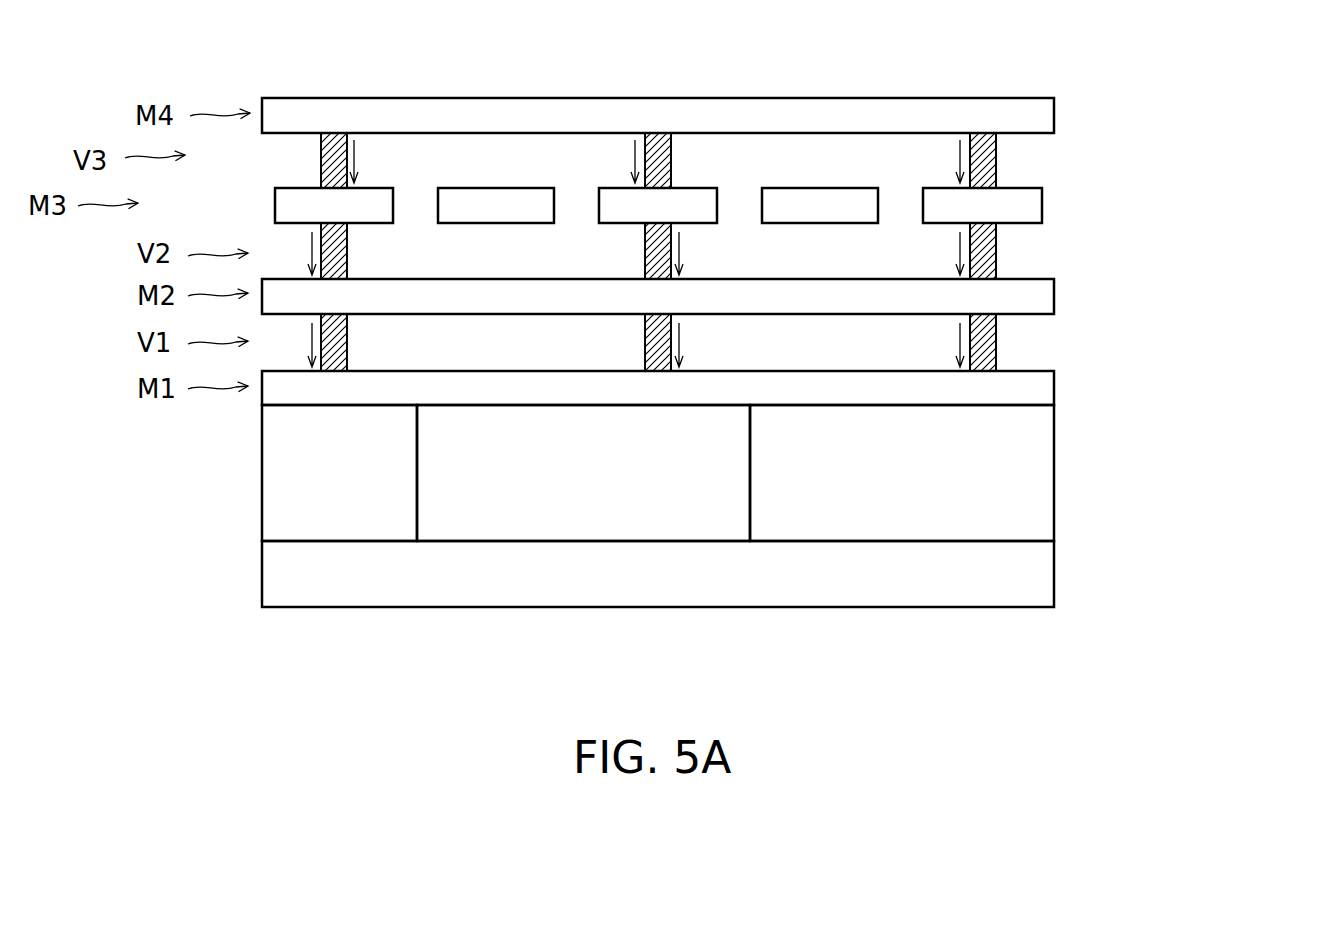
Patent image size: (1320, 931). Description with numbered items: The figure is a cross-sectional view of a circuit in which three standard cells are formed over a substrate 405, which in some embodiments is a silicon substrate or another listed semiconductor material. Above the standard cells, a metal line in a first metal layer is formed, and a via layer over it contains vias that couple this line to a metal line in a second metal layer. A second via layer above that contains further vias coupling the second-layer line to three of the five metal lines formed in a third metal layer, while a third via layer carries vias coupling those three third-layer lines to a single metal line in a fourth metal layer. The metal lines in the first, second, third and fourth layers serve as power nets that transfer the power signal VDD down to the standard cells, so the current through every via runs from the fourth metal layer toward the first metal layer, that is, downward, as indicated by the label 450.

The substrate 405 is at (1054, 575).
The current direction label 450 is at (356, 158).